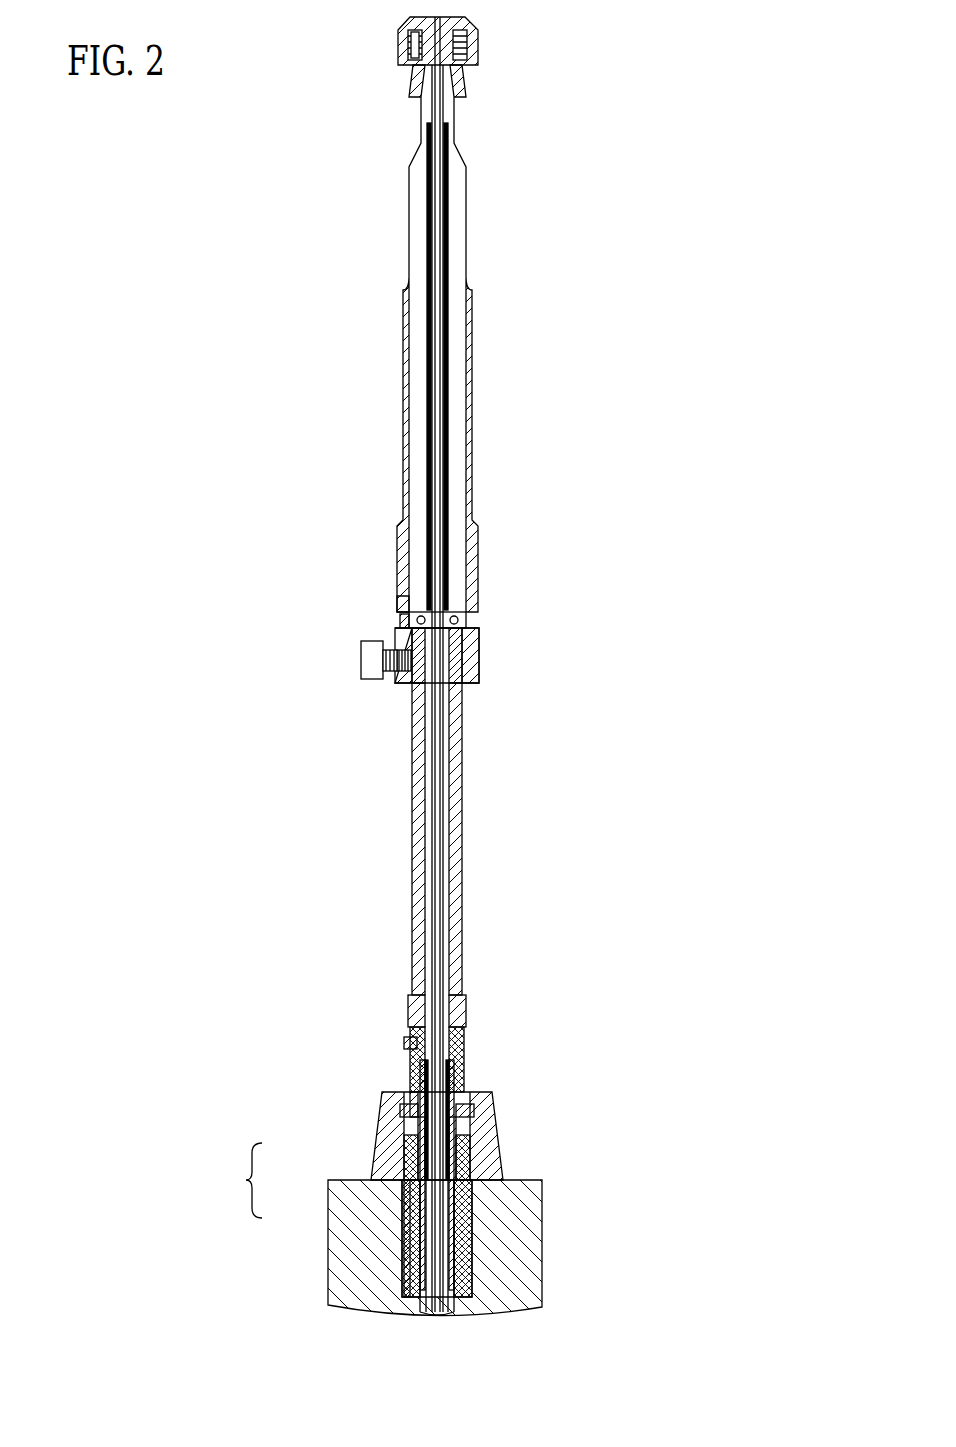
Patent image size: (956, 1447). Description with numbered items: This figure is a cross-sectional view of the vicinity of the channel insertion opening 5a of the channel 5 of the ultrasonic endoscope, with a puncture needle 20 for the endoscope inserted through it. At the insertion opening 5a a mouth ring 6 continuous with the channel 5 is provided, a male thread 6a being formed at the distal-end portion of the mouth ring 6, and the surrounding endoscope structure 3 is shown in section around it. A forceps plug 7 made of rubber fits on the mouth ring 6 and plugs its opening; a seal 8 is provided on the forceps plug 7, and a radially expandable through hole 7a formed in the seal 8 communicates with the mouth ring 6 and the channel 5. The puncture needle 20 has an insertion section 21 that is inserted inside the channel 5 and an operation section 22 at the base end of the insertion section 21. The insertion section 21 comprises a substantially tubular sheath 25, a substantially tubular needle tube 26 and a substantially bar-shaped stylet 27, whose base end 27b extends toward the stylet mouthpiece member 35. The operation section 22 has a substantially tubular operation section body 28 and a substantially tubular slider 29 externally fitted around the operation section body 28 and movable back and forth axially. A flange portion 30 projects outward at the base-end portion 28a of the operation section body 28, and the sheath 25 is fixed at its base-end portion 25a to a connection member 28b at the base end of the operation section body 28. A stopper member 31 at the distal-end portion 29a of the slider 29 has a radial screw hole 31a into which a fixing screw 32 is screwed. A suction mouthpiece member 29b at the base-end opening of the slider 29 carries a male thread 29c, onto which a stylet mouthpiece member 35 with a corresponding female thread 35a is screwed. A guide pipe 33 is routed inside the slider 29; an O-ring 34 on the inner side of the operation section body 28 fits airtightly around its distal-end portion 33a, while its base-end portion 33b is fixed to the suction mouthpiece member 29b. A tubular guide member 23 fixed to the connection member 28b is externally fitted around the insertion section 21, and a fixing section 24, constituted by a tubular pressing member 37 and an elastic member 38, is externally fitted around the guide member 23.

The base block 3 is at (543, 1228).
The channel 5 is at (506, 1254).
The channel insertion opening 5a is at (450, 1305).
The mouth ring 6 is at (466, 1196).
The male thread 6a is at (464, 1140).
The forceps plug 7 is at (446, 1131).
The through hole 7a is at (450, 1085).
The seal 8 is at (400, 1110).
The puncture needle 20 is at (700, 692).
The insertion section 21 is at (418, 1268).
The operation section 22 is at (484, 331).
The guide member 23 is at (456, 1124).
The fixing section 24 is at (318, 1194).
The sheath 25 is at (420, 1248).
The base-end portion 25a is at (464, 1044).
The needle tube 26 is at (440, 836).
The stylet 27 is at (438, 798).
The sheath end 27b is at (418, 40).
The operation section body 28 is at (494, 827).
The base-end portion 28a is at (462, 660).
The connection member 28b is at (464, 1000).
The slider 29 is at (489, 338).
The distal-end portion 29a is at (402, 612).
The suction mouthpiece member 29b is at (470, 116).
The male thread 29c is at (460, 52).
The flange portion 30 is at (466, 620).
The stopper member 31 is at (427, 670).
The screw hole 31a is at (398, 665).
The fixing screw 32 is at (363, 657).
The guide pipe 33 is at (499, 366).
The distal-end portion 33a is at (449, 543).
The base-end portion 33b is at (449, 183).
The O-ring 34 is at (405, 622).
The stylet mouthpiece member 35 is at (480, 40).
The female thread 35a is at (412, 60).
The pressing member 37 is at (410, 1170).
The elastic member 38 is at (408, 1218).